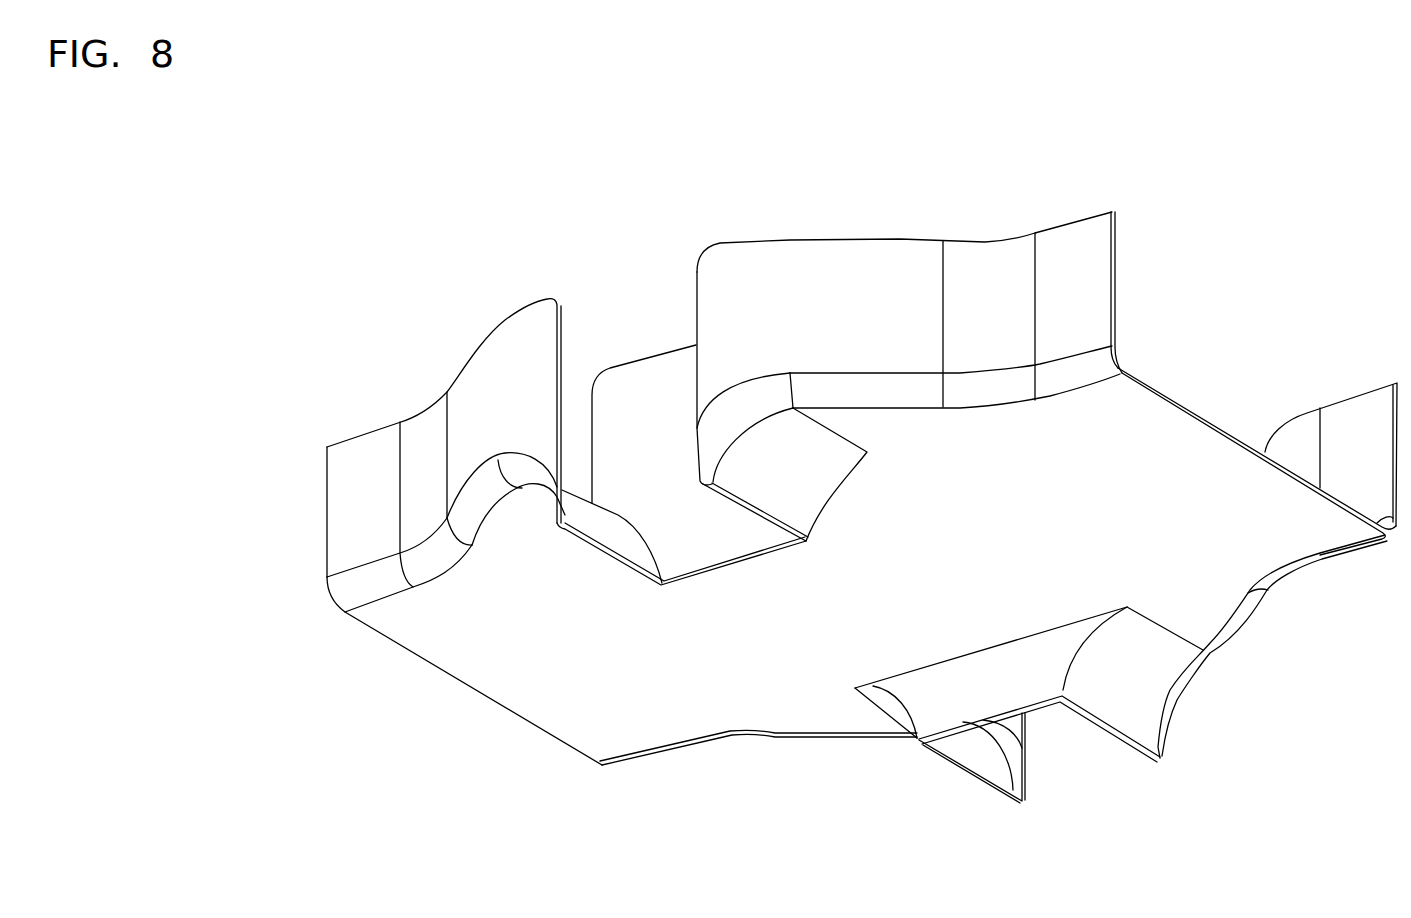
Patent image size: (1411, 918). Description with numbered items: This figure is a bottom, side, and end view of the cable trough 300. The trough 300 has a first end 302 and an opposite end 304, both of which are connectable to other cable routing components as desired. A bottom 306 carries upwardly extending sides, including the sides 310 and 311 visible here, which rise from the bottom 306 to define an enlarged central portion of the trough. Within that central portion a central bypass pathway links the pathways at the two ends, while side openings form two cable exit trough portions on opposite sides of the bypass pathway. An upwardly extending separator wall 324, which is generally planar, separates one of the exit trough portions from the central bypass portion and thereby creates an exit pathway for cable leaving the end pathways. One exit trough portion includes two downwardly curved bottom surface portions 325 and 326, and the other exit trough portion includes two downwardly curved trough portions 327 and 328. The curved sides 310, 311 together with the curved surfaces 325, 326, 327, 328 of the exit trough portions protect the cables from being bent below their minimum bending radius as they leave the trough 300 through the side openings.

The trough 300 is at (588, 194).
The first end 302 is at (450, 677).
The opposite end 304 is at (1213, 432).
The bottom 306 is at (1081, 510).
The upwardly extending side 310 is at (842, 322).
The upwardly extending side 311 is at (525, 415).
The separator wall 324 is at (674, 427).
The downwardly curved bottom surface portion 325 is at (1128, 710).
The downwardly curved bottom surface portion 326 is at (978, 757).
The downwardly curved trough portion 327 is at (803, 475).
The downwardly curved trough portion 328 is at (612, 545).